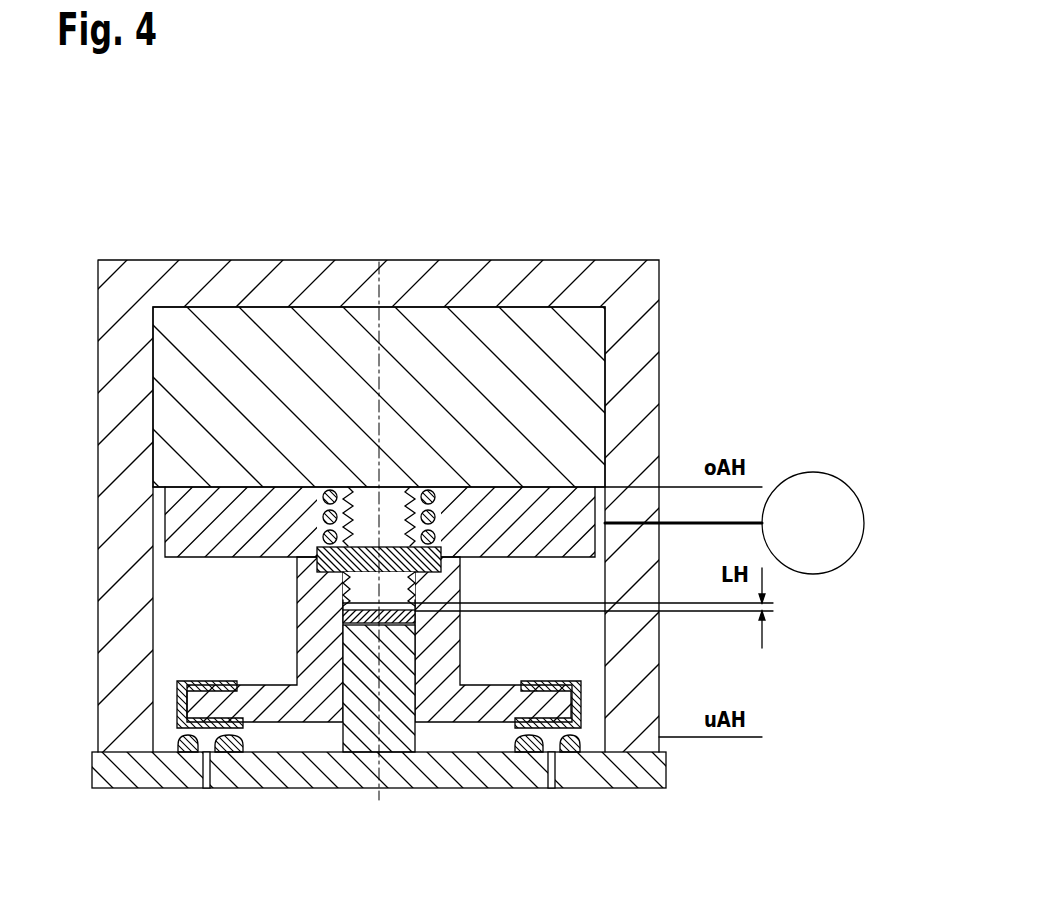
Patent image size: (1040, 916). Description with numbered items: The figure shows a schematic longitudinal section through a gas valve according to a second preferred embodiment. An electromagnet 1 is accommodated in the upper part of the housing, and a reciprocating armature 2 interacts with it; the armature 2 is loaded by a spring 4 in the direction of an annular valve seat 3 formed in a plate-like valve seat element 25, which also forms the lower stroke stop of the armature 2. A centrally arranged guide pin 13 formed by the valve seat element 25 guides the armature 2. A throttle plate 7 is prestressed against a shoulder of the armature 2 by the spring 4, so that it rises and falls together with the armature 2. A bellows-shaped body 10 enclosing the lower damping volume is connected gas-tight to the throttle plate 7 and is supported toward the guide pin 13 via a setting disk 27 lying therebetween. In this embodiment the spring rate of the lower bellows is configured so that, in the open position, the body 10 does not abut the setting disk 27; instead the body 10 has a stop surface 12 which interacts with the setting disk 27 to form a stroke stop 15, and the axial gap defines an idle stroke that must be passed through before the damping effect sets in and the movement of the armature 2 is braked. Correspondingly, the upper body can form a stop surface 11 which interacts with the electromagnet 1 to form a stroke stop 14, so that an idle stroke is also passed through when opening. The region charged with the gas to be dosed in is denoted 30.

The electromagnet 1 is at (258, 333).
The armature 2 is at (203, 532).
The valve seat 3 is at (228, 741).
The spring 4 is at (437, 500).
The throttle plate 7 is at (318, 562).
The body 10 is at (342, 592).
The stop surface 11 is at (388, 484).
The stop surface 12 is at (360, 625).
The guide pin 13 is at (402, 713).
The stroke stop 14 is at (379, 547).
The stroke stop 15 is at (365, 584).
The valve seat element 25 is at (307, 765).
The setting disk 27 is at (415, 622).
The region charged with gas 30 is at (577, 663).